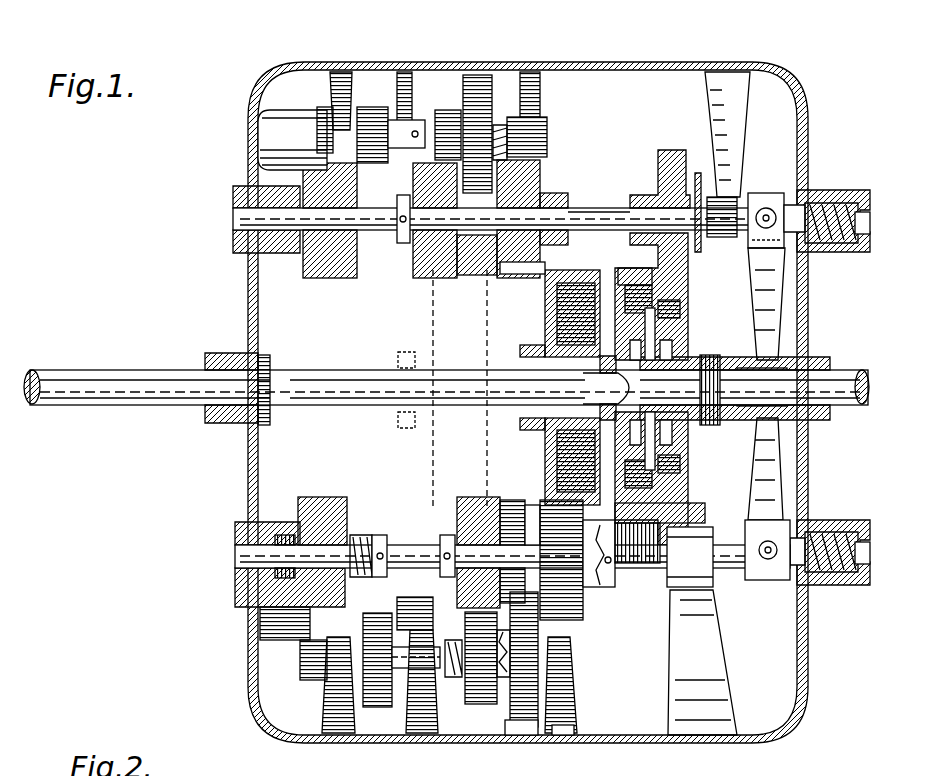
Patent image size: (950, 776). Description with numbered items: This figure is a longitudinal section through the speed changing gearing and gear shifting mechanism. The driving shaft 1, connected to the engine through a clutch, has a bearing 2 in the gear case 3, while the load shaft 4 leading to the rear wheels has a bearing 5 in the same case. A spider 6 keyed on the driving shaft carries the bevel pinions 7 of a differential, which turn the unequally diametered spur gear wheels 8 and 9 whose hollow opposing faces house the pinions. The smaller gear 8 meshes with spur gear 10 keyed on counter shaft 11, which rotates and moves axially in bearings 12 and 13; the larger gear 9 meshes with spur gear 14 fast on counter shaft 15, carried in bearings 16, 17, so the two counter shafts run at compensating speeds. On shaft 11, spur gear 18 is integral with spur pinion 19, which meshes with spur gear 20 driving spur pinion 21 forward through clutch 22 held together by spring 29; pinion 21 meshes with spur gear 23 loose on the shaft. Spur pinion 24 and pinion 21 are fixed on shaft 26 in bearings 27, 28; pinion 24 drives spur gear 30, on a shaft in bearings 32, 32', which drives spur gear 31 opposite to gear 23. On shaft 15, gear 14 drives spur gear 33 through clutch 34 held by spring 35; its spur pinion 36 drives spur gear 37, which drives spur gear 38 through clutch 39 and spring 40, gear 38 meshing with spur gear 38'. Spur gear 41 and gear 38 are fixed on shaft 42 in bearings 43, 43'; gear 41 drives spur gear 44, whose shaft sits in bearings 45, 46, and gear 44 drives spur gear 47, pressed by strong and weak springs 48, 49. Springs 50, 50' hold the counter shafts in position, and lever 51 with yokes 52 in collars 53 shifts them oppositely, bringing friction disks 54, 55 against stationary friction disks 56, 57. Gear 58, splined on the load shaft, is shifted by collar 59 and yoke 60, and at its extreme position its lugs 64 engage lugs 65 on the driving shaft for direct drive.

The driving shaft 1 is at (838, 378).
The bearing 2 is at (316, 775).
The gear case 3 is at (18, 410).
The load shaft 4 is at (627, 31).
The bearing 5 is at (235, 428).
The spider 6 is at (695, 345).
The bevel pinions 7 is at (690, 322).
The spur gear wheel 8 is at (680, 302).
The spur gear wheel 9 is at (630, 270).
The spur gear 10 is at (665, 160).
The counter shaft 11 is at (585, 212).
The bearing 12 is at (235, 238).
The bearing 13 is at (748, 193).
The spur gear 14 is at (650, 508).
The counter shaft 15 is at (420, 548).
The bearing 16 is at (240, 582).
The bearing 17 is at (695, 610).
The spur gear 18 is at (545, 195).
The spur pinion 19 is at (545, 295).
The spur gear 20 is at (500, 125).
The spur pinion 21 is at (445, 125).
The clutch 22 is at (475, 100).
The spur gear 23 is at (455, 280).
The spur pinion 24 is at (370, 130).
The shaft 26 is at (418, 120).
The bearing 27 is at (325, 135).
The bearing 28 is at (540, 135).
The spring 29 is at (520, 150).
The spur gear 30 is at (400, 244).
The spur gear 31 is at (330, 280).
The bearing 32 is at (252, 140).
The bearing 32' is at (421, 243).
The spur gear 33 is at (575, 620).
The clutch 34 is at (600, 610).
The spring 35 is at (512, 500).
The spur pinion 36 is at (530, 520).
The spur gear 37 is at (525, 700).
The spur gear 38 is at (519, 748).
The spur gear 38' is at (474, 538).
The clutch 39 is at (565, 735).
The spring 40 is at (430, 690).
The spur gear 41 is at (380, 710).
The shaft 42 is at (425, 720).
The bearing 43 is at (276, 685).
The bearing 43' is at (551, 658).
The spur gear 44 is at (310, 655).
The bearing 45 is at (285, 625).
The bearing 46 is at (418, 605).
The spur gear 47 is at (325, 515).
The spring 48 is at (275, 540).
The spring 49 is at (365, 535).
The spring 50 is at (845, 199).
The spring 50' is at (850, 529).
The lever 51 is at (750, 252).
The yokes 52 is at (800, 175).
The collars 53 is at (815, 195).
The friction disk 54 is at (700, 175).
The friction disk 55 is at (572, 660).
The stationary friction disk 56 is at (725, 195).
The stationary friction disk 57 is at (690, 545).
The gear 58 is at (433, 330).
The collar 59 is at (545, 355).
The yoke 60 is at (400, 430).
The lugs 64 is at (560, 350).
The lugs 65 is at (570, 290).